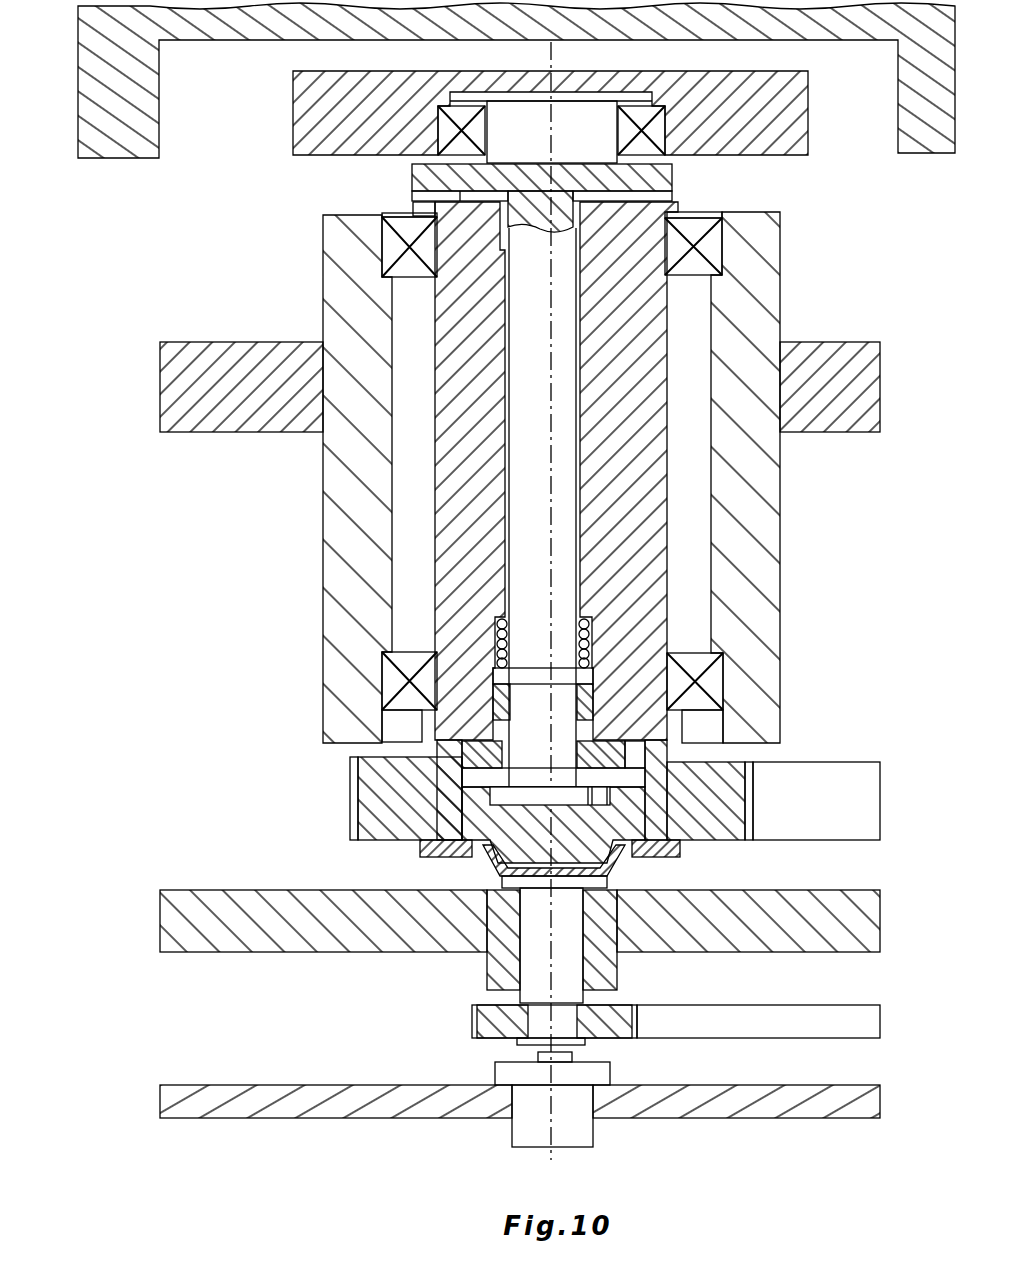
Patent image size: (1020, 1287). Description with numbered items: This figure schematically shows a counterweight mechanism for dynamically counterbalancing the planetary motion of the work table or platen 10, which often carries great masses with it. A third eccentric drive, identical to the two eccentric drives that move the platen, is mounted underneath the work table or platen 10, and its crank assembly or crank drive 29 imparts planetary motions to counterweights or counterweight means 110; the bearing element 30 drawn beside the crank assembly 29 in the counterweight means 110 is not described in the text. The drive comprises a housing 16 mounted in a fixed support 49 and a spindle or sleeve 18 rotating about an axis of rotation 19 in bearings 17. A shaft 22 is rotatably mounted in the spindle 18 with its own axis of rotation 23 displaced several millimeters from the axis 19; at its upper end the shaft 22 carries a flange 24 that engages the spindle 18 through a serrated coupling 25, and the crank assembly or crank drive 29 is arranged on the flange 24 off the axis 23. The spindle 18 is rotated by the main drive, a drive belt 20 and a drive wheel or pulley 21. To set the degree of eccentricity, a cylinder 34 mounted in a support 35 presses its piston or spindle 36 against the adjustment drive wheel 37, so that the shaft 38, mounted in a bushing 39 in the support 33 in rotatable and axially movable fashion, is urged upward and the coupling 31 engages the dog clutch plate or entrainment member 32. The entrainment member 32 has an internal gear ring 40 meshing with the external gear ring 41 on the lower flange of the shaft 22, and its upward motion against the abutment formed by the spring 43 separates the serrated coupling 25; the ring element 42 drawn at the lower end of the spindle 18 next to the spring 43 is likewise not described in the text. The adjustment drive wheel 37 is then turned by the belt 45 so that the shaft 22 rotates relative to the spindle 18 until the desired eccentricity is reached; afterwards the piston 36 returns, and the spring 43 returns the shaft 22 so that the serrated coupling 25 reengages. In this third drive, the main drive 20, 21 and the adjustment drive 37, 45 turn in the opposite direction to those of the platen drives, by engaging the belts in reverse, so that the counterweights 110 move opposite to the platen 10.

The work table or platen 10 is at (244, 44).
The counterweights or counterweight means 110 is at (390, 92).
The crank assembly or crank drive 29 is at (510, 110).
The axis of rotation of the shaft 23 is at (548, 57).
The axis of rotation of the spindle 19 is at (555, 57).
The upper bearing 30 is at (640, 108).
The flange 24 is at (655, 172).
The serrated coupling 25 is at (415, 192).
The bearings 17 is at (418, 212).
The spindle or sleeve 18 is at (468, 218).
The housing 16 is at (770, 228).
The support 49 is at (845, 365).
The shaft 22 is at (567, 500).
The spring (abutment or stop) 43 is at (502, 652).
The retaining ring 42 is at (474, 752).
The drive wheel or pulley 21 is at (375, 792).
The external gear ring 41 is at (578, 795).
The internal gear ring 40 is at (665, 758).
The drive belt 20 is at (840, 815).
The dog clutch plate or entrainment member 32 is at (660, 845).
The coupling 31 is at (597, 890).
The support 33 is at (190, 940).
The bushing 39 is at (497, 974).
The shaft 38 is at (572, 996).
The adjustment drive wheel 37 is at (488, 1025).
The belt 45 is at (848, 1022).
The piston or spindle 36 is at (565, 1057).
The cylinder 34 is at (580, 1140).
The support 35 is at (830, 1112).